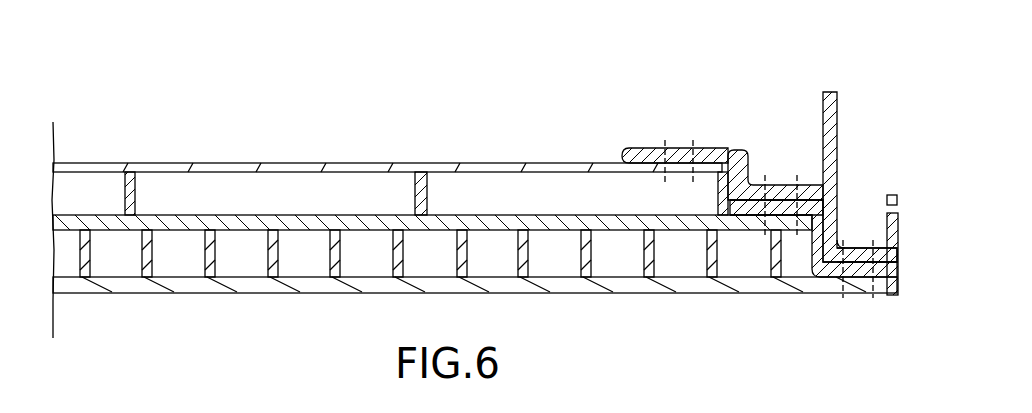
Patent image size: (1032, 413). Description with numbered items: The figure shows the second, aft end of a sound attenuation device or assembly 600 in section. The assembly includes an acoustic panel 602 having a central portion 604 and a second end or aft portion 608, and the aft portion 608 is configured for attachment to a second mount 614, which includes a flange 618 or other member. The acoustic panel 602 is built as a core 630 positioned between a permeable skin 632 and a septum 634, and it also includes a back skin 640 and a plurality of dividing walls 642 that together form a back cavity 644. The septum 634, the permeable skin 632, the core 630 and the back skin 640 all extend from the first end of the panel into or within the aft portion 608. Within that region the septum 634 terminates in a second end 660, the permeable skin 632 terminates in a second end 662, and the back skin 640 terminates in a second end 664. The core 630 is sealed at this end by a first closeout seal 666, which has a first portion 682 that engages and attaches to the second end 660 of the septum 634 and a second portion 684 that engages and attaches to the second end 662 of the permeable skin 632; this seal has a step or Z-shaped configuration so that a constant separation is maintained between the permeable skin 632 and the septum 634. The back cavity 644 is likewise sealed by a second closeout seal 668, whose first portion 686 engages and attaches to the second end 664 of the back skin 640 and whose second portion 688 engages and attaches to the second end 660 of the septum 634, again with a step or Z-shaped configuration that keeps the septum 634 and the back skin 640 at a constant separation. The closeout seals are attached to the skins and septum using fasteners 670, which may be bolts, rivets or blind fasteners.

The sound attenuation device or assembly 600 is at (86, 96).
The acoustic panel 602 is at (145, 155).
The central portion 604 is at (391, 155).
The back cavity 644 is at (223, 157).
The dividing walls 642 is at (432, 166).
The back skin 640 is at (478, 162).
The second end of the back skin 664 is at (725, 165).
The core 630 is at (132, 305).
The permeable skin 632 is at (205, 285).
The septum 634 is at (248, 235).
The second mount 614 is at (798, 107).
The first portion of the second closeout seal 686 is at (630, 148).
The fasteners 670 is at (660, 148).
The second closeout seal 668 is at (740, 152).
The second portion of the second closeout seal 688 is at (815, 183).
The flange 618 is at (826, 92).
The second end of the permeable skin 662 is at (882, 286).
The first closeout seal 666 is at (828, 268).
The second end of the septum 660 is at (797, 213).
The first portion of the first closeout seal 682 is at (745, 210).
The second end or aft portion 608 is at (870, 132).
The second portion of the first closeout seal 684 is at (893, 279).